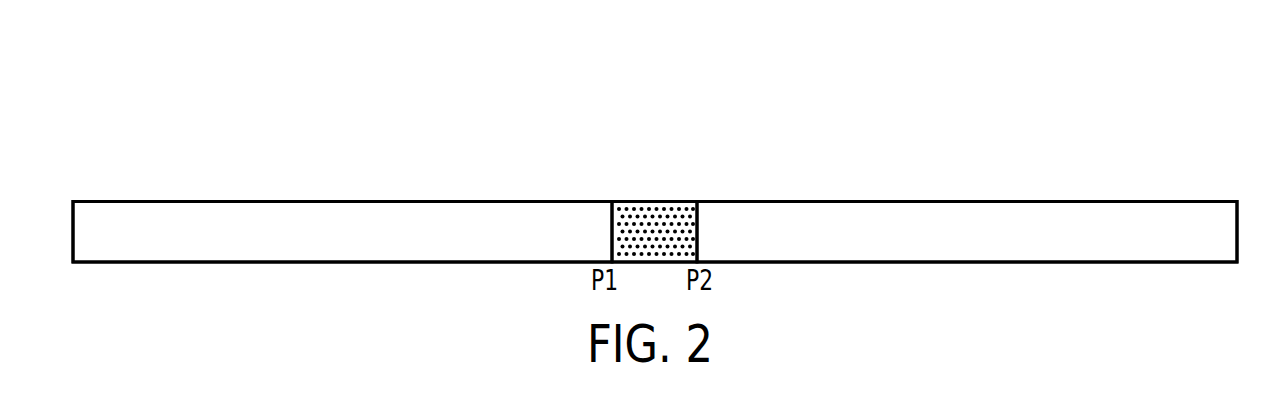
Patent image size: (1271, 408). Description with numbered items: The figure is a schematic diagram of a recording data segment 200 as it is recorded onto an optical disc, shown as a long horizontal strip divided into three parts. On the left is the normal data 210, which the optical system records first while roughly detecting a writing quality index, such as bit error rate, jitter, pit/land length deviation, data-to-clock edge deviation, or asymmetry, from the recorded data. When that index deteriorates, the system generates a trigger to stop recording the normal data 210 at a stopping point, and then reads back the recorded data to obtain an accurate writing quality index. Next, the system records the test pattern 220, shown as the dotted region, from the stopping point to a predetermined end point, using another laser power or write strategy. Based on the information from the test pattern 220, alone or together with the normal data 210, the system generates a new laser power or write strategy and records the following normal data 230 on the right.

The recording data segment 200 is at (1100, 78).
The normal data 210 is at (322, 201).
The test pattern 220 is at (655, 201).
The normal data 230 is at (986, 201).